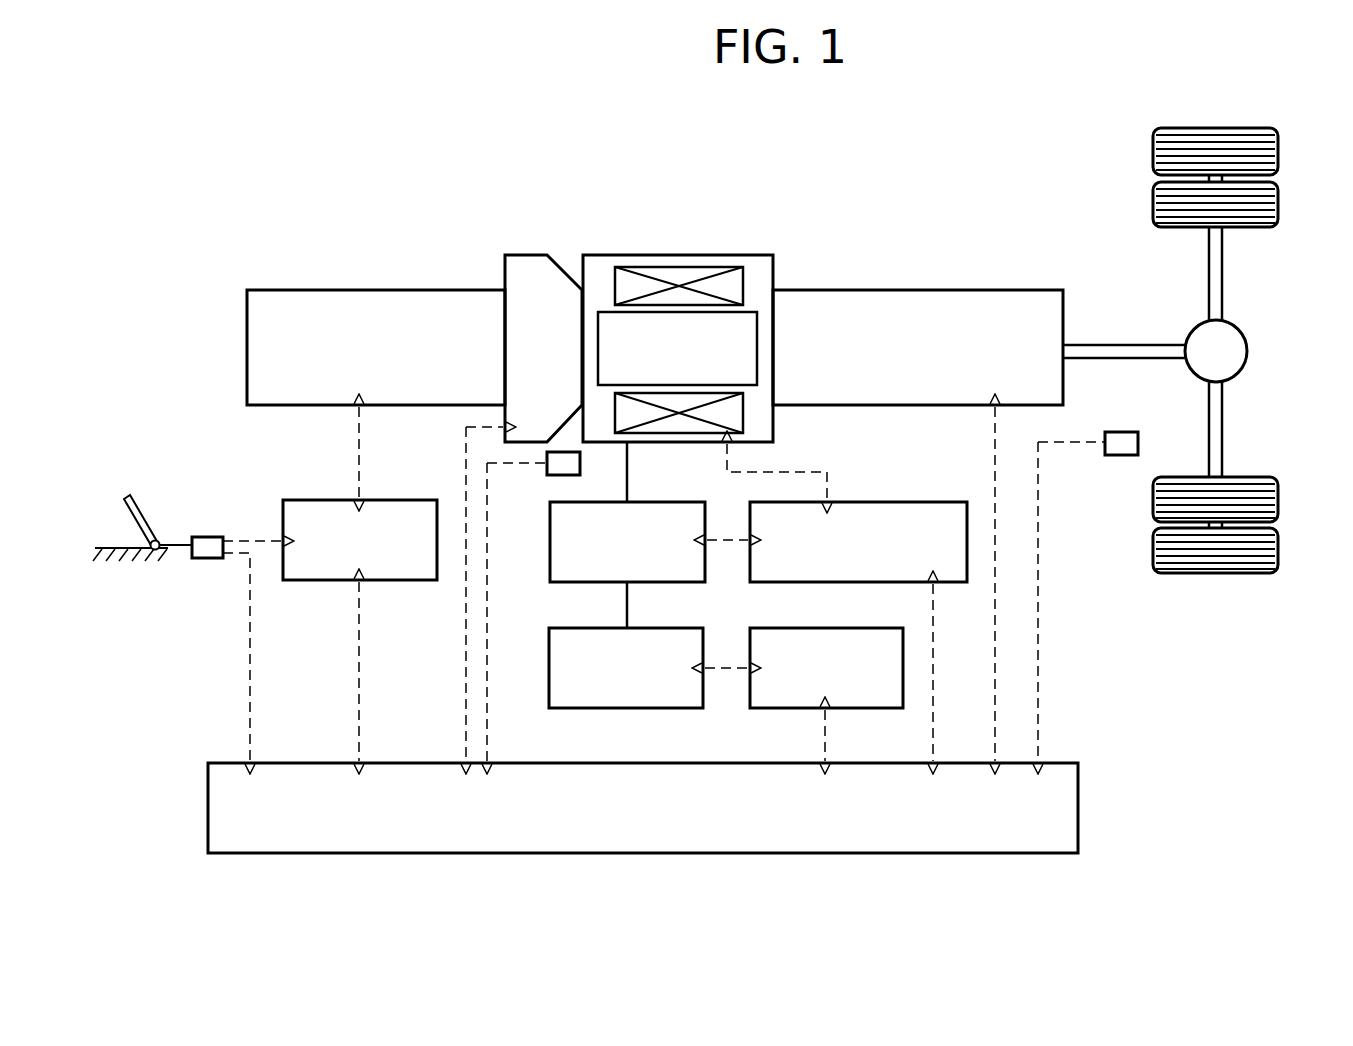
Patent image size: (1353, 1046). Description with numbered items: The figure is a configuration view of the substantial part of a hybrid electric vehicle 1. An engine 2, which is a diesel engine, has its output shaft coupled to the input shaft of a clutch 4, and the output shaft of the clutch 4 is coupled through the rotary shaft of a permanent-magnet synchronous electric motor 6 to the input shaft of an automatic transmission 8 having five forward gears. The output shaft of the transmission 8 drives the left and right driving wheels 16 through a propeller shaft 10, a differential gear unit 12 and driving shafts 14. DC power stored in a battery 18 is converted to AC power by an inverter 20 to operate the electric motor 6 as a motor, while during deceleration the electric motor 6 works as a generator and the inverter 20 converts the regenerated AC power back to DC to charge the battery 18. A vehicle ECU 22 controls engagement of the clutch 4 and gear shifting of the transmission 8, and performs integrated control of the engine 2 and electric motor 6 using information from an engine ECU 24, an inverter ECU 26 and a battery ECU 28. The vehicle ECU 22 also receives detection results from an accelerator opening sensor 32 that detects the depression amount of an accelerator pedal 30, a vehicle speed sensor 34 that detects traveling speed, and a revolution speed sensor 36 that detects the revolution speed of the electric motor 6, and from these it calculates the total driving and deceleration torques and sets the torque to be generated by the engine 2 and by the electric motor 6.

The hybrid electric vehicle 1 is at (785, 180).
The engine 2 is at (287, 290).
The clutch 4 is at (519, 255).
The electric motor 6 is at (651, 255).
The transmission 8 is at (837, 290).
The propeller shaft 10 is at (1112, 345).
The differential gear unit 12 is at (1245, 349).
The driving shafts 14 is at (1216, 265).
The driving wheels 16 is at (1276, 197).
The battery 18 is at (574, 708).
The inverter 20 is at (567, 583).
The vehicle ECU 22 is at (1078, 778).
The engine ECU 24 is at (307, 500).
The inverter ECU 26 is at (936, 502).
The battery ECU 28 is at (775, 708).
The accelerator pedal 30 is at (136, 498).
The accelerator opening sensor 32 is at (205, 537).
The vehicle speed sensor 34 is at (1120, 440).
The revolution speed sensor 36 is at (557, 473).